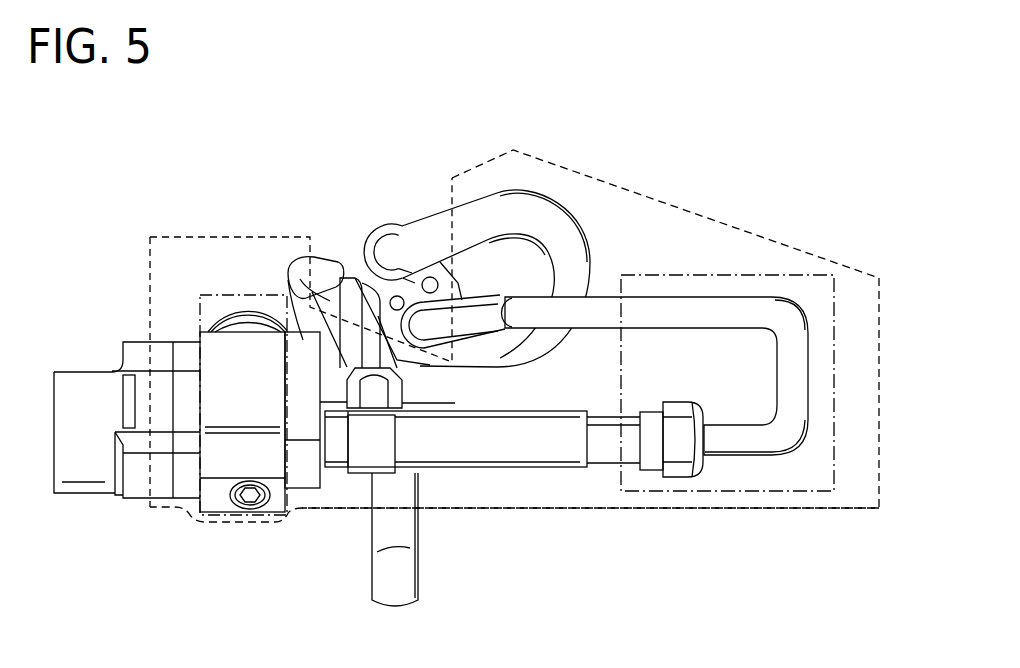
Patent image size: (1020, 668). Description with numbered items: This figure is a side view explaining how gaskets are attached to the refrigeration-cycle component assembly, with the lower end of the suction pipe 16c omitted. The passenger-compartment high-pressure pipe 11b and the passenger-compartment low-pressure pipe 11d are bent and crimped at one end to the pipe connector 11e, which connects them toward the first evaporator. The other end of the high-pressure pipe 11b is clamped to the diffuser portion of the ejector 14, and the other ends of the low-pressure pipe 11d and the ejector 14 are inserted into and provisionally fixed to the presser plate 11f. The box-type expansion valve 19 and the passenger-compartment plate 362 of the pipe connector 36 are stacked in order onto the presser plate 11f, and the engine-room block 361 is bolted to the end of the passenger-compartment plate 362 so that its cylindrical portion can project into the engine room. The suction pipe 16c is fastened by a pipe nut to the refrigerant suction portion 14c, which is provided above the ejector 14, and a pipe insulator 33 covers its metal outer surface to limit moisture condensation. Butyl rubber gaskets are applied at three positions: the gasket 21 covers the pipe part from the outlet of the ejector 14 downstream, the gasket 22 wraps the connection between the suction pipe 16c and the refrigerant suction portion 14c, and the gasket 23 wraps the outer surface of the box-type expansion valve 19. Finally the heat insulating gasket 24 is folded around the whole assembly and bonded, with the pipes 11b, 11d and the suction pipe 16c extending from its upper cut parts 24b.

The pipe connector 36 is at (178, 160).
The engine-room block 361 is at (138, 350).
The passenger-compartment plate 362 is at (185, 350).
The box-type expansion valve 19 is at (233, 352).
The presser plate 11f is at (307, 342).
The suction pipe 16c is at (327, 262).
The gasket 22 is at (347, 250).
The pipe connector 11e is at (395, 222).
The passenger-compartment low-pressure pipe 11d is at (553, 218).
The cut parts 24b is at (452, 178).
The gasket 24 is at (572, 508).
The passenger-compartment high-pressure pipe 11b is at (742, 305).
The gasket 21 is at (780, 495).
The gasket 23 is at (248, 514).
The ejector 14 is at (496, 455).
The refrigerant suction portion 14c is at (372, 400).
The pipe insulator 33 is at (410, 580).